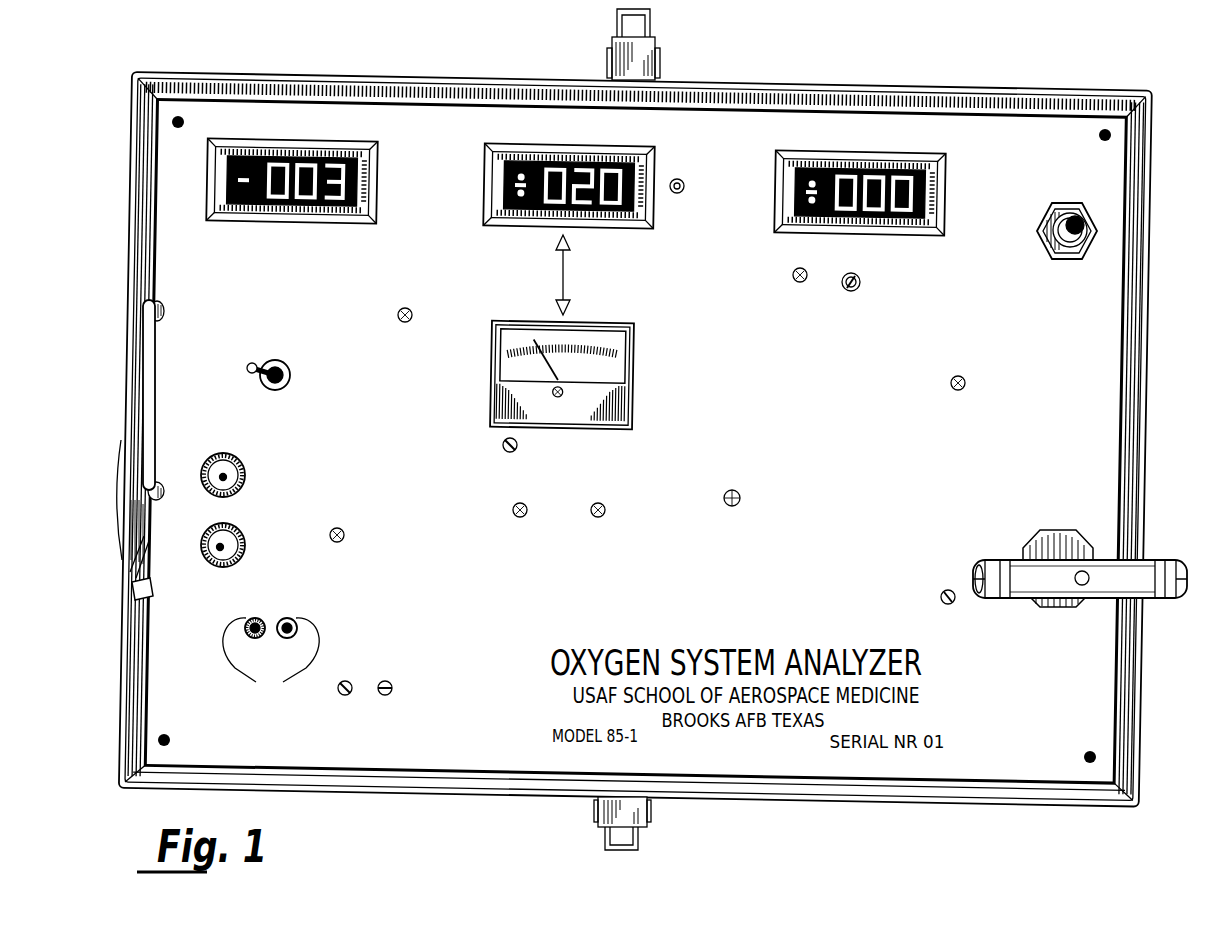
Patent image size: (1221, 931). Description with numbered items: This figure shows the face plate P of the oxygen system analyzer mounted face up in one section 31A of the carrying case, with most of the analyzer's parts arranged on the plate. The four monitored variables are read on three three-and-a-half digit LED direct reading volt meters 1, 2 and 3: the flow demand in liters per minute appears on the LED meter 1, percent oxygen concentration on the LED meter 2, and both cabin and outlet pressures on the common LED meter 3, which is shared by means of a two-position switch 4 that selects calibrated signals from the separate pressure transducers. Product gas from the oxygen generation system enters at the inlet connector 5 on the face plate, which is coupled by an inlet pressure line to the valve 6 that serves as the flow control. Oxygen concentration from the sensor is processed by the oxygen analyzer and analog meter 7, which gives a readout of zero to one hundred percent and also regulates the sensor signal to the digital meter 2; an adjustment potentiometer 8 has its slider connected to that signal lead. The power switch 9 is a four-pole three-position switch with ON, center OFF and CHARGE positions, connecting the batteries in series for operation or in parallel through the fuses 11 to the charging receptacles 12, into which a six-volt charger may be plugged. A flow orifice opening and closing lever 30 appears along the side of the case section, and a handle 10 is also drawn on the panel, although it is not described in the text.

The LED meter 1 is at (378, 186).
The LED meter 2 is at (480, 177).
The LED meter 3 is at (946, 192).
The two-position switch 4 is at (861, 279).
The inlet connector 5 is at (1055, 258).
The valve 6 is at (1025, 539).
The analog meter 7 is at (634, 390).
The adjustment potentiometer 8 is at (680, 184).
The power switch 9 is at (250, 368).
The handle 10 is at (157, 419).
The fuses 11 is at (246, 469).
The charging receptacles 12 is at (275, 632).
The flow orifice opening/closing lever 30 is at (155, 592).
The case section 31A is at (758, 84).
The face plate P is at (1024, 138).